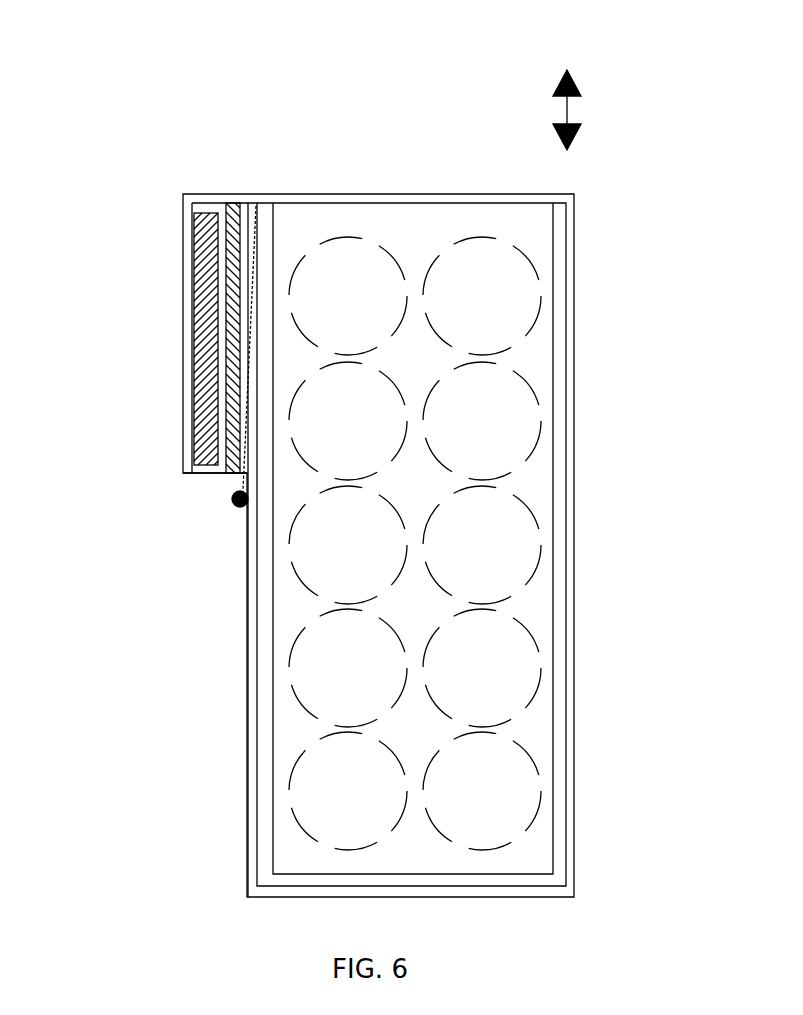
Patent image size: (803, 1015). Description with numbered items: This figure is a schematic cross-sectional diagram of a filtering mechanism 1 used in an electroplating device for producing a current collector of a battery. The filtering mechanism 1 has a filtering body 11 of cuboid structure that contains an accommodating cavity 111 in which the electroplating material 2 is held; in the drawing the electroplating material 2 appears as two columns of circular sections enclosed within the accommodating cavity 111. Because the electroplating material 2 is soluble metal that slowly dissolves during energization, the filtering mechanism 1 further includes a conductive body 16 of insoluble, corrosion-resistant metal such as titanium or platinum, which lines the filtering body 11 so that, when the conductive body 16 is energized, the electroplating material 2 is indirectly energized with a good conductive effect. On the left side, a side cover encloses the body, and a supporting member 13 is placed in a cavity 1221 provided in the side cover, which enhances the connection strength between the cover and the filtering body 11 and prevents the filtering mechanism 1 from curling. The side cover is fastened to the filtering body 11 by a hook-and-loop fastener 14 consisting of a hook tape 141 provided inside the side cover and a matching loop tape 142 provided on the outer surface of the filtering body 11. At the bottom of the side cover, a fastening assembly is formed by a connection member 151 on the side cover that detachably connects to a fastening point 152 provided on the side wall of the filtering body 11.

The filtering mechanism 1 is at (380, 61).
The filtering body 11 is at (573, 594).
The accommodating cavity 111 is at (535, 348).
The conductive body 16 is at (557, 660).
The cavity 1221 is at (187, 410).
The supporting member 13 is at (200, 305).
The hook-and-loop fastener 14 is at (305, 118).
The hook tape 141 is at (231, 208).
The loop tape 142 is at (256, 206).
The connection member 151 is at (232, 497).
The fastening point 152 is at (232, 505).
The electroplating material 2 is at (482, 424).